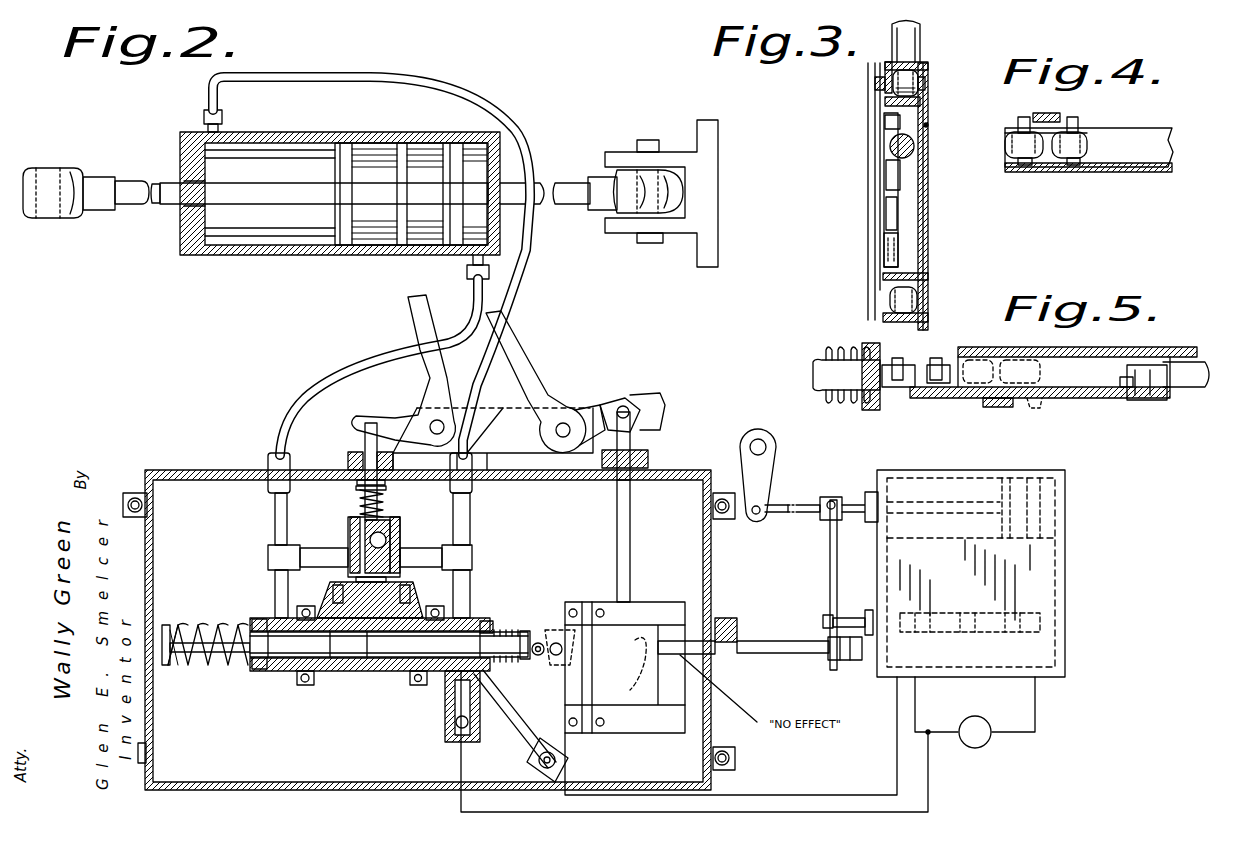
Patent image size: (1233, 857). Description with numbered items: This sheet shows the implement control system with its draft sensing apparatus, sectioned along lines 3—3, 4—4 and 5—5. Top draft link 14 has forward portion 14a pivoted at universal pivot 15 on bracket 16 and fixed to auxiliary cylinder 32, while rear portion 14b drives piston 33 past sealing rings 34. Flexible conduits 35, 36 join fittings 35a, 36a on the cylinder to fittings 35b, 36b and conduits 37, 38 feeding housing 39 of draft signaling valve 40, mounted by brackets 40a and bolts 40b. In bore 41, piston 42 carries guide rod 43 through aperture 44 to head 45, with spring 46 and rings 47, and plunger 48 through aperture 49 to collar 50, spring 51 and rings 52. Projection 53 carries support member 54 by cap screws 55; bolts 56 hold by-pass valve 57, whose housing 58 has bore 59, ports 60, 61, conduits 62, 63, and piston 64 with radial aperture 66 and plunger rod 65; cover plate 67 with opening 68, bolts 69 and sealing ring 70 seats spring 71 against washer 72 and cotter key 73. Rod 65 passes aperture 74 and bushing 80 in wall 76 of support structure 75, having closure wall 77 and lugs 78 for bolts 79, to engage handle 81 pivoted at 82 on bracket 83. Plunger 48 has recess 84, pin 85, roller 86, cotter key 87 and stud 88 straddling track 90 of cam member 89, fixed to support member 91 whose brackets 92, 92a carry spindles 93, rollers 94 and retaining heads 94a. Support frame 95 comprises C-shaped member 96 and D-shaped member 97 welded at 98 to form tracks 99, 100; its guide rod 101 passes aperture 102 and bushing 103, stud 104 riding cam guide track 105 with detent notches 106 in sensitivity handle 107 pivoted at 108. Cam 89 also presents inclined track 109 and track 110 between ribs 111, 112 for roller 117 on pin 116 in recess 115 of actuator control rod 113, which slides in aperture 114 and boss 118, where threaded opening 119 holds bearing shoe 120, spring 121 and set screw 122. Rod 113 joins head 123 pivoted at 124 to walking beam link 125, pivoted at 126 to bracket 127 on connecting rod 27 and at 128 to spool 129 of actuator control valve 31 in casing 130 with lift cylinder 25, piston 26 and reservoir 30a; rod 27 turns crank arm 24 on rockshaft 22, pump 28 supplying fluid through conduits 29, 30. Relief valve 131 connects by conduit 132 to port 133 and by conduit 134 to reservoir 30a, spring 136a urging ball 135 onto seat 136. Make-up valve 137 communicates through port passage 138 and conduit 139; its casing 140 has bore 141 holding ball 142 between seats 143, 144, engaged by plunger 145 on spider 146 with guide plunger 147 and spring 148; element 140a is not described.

In FIG. 2, the section line 3— 3 is at (645, 752).
In FIG. 2, the section line 4— 4 is at (612, 598).
In FIG. 2, the section line 5— 5 is at (695, 672).
In FIG. 2, the upper draft link 14 is at (103, 219).
In FIG. 2, the forward link portion 14a is at (568, 187).
In FIG. 2, the rear link portion 14b is at (130, 187).
In FIG. 2, the universal pivot 15 is at (628, 182).
In FIG. 2, the bracket 16 is at (678, 151).
In FIG. 2, the rockshaft 22 is at (760, 440).
In FIG. 2, the crank arm 24 is at (768, 500).
In FIG. 2, the lift cylinder 25 is at (975, 480).
In FIG. 2, the piston 26 is at (1032, 500).
In FIG. 2, the connecting rod 27 is at (780, 505).
In FIG. 2, the pump 28 is at (979, 749).
In FIG. 2, the conduit 29 is at (917, 710).
In FIG. 2, the conduit 30 is at (1035, 710).
In FIG. 2, the reservoir 30a is at (1040, 660).
In FIG. 2, the actuator control valve 31 is at (1042, 620).
In FIG. 2, the auxiliary hydraulic cylinder 32 is at (405, 133).
In FIG. 2, the piston 33 is at (378, 236).
In FIG. 2, the sealing rings 34 is at (183, 215).
In FIG. 2, the flexible hose conduit 35 is at (472, 311).
In FIG. 2, the fitting 35a is at (466, 274).
In FIG. 2, the fitting 35b is at (270, 558).
In FIG. 2, the flexible hose conduit 36 is at (520, 290).
In FIG. 2, the fitting 36a is at (217, 113).
In FIG. 2, the fitting 36b is at (462, 552).
In FIG. 2, the conduit 37 is at (273, 585).
In FIG. 2, the conduit 38 is at (472, 578).
In FIG. 2, the valve housing 39 is at (345, 676).
In FIG. 2, the draft signaling control valve unit 40 is at (378, 688).
In FIG. 2, the mounting brackets 40a is at (302, 692).
In FIG. 2, the fastening bolt means 40b is at (388, 678).
In FIG. 2, the bore 41 is at (370, 678).
In FIG. 2, the piston 42 is at (322, 691).
In FIG. 2, the guide rod 43 is at (292, 668).
In FIG. 2, the aperture 44 is at (257, 673).
In FIG. 2, the enlarged head 45 is at (168, 668).
In FIG. 2, the spring 46 is at (214, 632).
In FIG. 2, the sealing rings 47 is at (240, 666).
In FIG. 2, the plunger member 48 is at (404, 618).
In FIG. 3, the plunger member 48 is at (915, 166).
In FIG. 5, the plunger member 48 is at (815, 372).
In FIG. 2, the aperture 49 is at (505, 650).
In FIG. 2, the abutment collar 50 is at (556, 660).
In FIG. 5, the abutment collar 50 is at (866, 408).
In FIG. 2, the coiled spring 51 is at (508, 612).
In FIG. 5, the coiled spring 51 is at (826, 348).
In FIG. 2, the sealing rings 52 is at (478, 625).
In FIG. 2, the pedestal-like projection 53 is at (440, 606).
In FIG. 2, the plate-like support member 54 is at (405, 595).
In FIG. 2, the cap screws 55 is at (390, 588).
In FIG. 2, the bolts 56 is at (370, 604).
In FIG. 2, the by-pass valve 57 is at (343, 526).
In FIG. 2, the cylinder-like housing 58 is at (392, 535).
In FIG. 2, the bore 59 is at (373, 602).
In FIG. 2, the port 60 is at (352, 545).
In FIG. 2, the port 61 is at (400, 545).
In FIG. 2, the conduit 62 is at (340, 552).
In FIG. 2, the conduit 63 is at (400, 560).
In FIG. 2, the piston 64 is at (345, 572).
In FIG. 2, the plunger rod 65 is at (380, 475).
In FIG. 2, the radial aperture 66 is at (340, 590).
In FIG. 2, the cover plate 67 is at (392, 520).
In FIG. 2, the opening 68 is at (400, 530).
In FIG. 2, the bolts 69 is at (360, 517).
In FIG. 2, the sealing ring 70 is at (400, 512).
In FIG. 2, the coil spring 71 is at (355, 490).
In FIG. 2, the stop collar 72 is at (356, 489).
In FIG. 2, the cotter key 73 is at (385, 490).
In FIG. 2, the aperture 74 is at (340, 483).
In FIG. 2, the support structure 75 is at (195, 460).
In FIG. 2, the outer perimeter wall 76 is at (215, 470).
In FIG. 2, the inner closure wall 77 is at (195, 509).
In FIG. 2, the lugs 78 is at (733, 760).
In FIG. 2, the fastening bolt means 79 is at (724, 750).
In FIG. 2, the gland or bushing 80 is at (352, 468).
In FIG. 2, the control handle 81 is at (420, 372).
In FIG. 2, the pivot 82 is at (440, 420).
In FIG. 2, the bracket 83 is at (518, 458).
In FIG. 5, the recess 84 is at (880, 395).
In FIG. 5, the stud 85 is at (900, 362).
In FIG. 2, the roller 86 is at (538, 660).
In FIG. 5, the roller 86 is at (905, 392).
In FIG. 4, the cotter key 87 is at (1048, 116).
In FIG. 5, the cotter key 87 is at (888, 390).
In FIG. 2, the large-headed pin 88 is at (562, 612).
In FIG. 5, the large-headed pin 88 is at (937, 360).
In FIG. 2, the cam member 89 is at (625, 690).
In FIG. 3, the cam member 89 is at (880, 225).
In FIG. 4, the cam member 89 is at (1135, 130).
In FIG. 5, the cam member 89 is at (945, 398).
In FIG. 2, the overturned edge portion 90 is at (565, 715).
In FIG. 3, the overturned edge portion 90 is at (885, 212).
In FIG. 5, the overturned edge portion 90 is at (922, 388).
In FIG. 2, the support member 91 is at (625, 655).
In FIG. 3, the support member 91 is at (868, 185).
In FIG. 5, the support member 91 is at (998, 408).
In FIG. 3, the upper roller carrying bracket 92 is at (880, 95).
In FIG. 4, the upper roller carrying bracket 92 is at (1010, 131).
In FIG. 3, the lower roller carrying bracket 92a is at (885, 285).
In FIG. 5, the lower roller carrying bracket 92a is at (1035, 410).
In FIG. 3, the spindles 93 is at (890, 298).
In FIG. 4, the spindles 93 is at (1073, 120).
In FIG. 3, the roller member 94 is at (928, 290).
In FIG. 4, the roller member 94 is at (1008, 150).
In FIG. 5, the roller member 94 is at (1020, 362).
In FIG. 3, the enlarged head 94a is at (918, 300).
In FIG. 4, the enlarged head 94a is at (1072, 165).
In FIG. 3, the cam member support frame 95 is at (937, 230).
In FIG. 3, the C-shaped member 96 is at (928, 200).
In FIG. 4, the C-shaped member 96 is at (1120, 172).
In FIG. 5, the C-shaped member 96 is at (1165, 357).
In FIG. 3, the D-shaped inner member 97 is at (923, 188).
In FIG. 5, the D-shaped inner member 97 is at (1110, 353).
In FIG. 3, the welds 98 is at (928, 270).
In FIG. 3, the upper track 99 is at (922, 103).
In FIG. 3, the lower track 100 is at (930, 278).
In FIG. 2, the guide rod 101 is at (632, 541).
In FIG. 3, the guide rod 101 is at (920, 40).
In FIG. 2, the aperture 102 is at (632, 500).
In FIG. 2, the gland or bushing 103 is at (650, 458).
In FIG. 2, the large-headed stud 104 is at (662, 415).
In FIG. 2, the cam guide track 105 is at (603, 410).
In FIG. 2, the detent notches 106 is at (660, 414).
In FIG. 2, the sensitivity lever 107 is at (512, 348).
In FIG. 2, the pivot 108 is at (562, 420).
In FIG. 2, the inclined cam track 109 is at (648, 698).
In FIG. 3, the inclined cam track 109 is at (884, 250).
In FIG. 2, the track 110 is at (628, 670).
In FIG. 2, the ridge 111 is at (625, 650).
In FIG. 5, the ridge 111 is at (1115, 383).
In FIG. 2, the ridge 112 is at (645, 672).
In FIG. 3, the ridge 112 is at (890, 172).
In FIG. 5, the ridge 112 is at (1165, 362).
In FIG. 2, the actuator control rod 113 is at (780, 654).
In FIG. 3, the actuator control rod 113 is at (890, 148).
In FIG. 5, the actuator control rod 113 is at (1192, 390).
In FIG. 2, the aperture 114 is at (735, 655).
In FIG. 5, the recess 115 is at (1155, 400).
In FIG. 5, the stud 116 is at (1140, 400).
In FIG. 2, the roller 117 is at (633, 693).
In FIG. 3, the roller 117 is at (887, 128).
In FIG. 5, the roller 117 is at (1125, 388).
In FIG. 2, the boss 118 is at (738, 632).
In FIG. 2, the threaded opening 119 is at (730, 620).
In FIG. 2, the bearing shoe 120 is at (740, 639).
In FIG. 2, the spring 121 is at (736, 625).
In FIG. 2, the set screw 122 is at (722, 618).
In FIG. 2, the head 123 is at (848, 661).
In FIG. 2, the pivot 124 is at (835, 660).
In FIG. 2, the walking beam link 125 is at (830, 565).
In FIG. 2, the pivot 126 is at (828, 497).
In FIG. 2, the bracket 127 is at (815, 513).
In FIG. 2, the pivot 128 is at (823, 621).
In FIG. 2, the control spool 129 is at (848, 620).
In FIG. 2, the casing-like structure 130 is at (1084, 548).
In FIG. 2, the pressure relief and bleed valve 131 is at (524, 762).
In FIG. 2, the conduit 132 is at (515, 728).
In FIG. 2, the port 133 is at (462, 650).
In FIG. 2, the conduit 134 is at (797, 795).
In FIG. 2, the ball member 135 is at (556, 752).
In FIG. 2, the valve seat 136 is at (530, 768).
In FIG. 2, the spring 136a is at (565, 765).
In FIG. 2, the make-up and surge restricting valve 137 is at (470, 742).
In FIG. 2, the port passage 138 is at (445, 680).
In FIG. 2, the conduit 139 is at (460, 812).
In FIG. 2, the casing 140 is at (458, 745).
In FIG. 2, the valve 140a is at (400, 712).
In FIG. 2, the bore 141 is at (485, 706).
In FIG. 2, the ball 142 is at (478, 727).
In FIG. 2, the valve seat 143 is at (448, 735).
In FIG. 2, the valve seat 144 is at (452, 740).
In FIG. 2, the plunger 145 is at (448, 725).
In FIG. 2, the cruciform-shaped spider 146 is at (485, 692).
In FIG. 2, the guide plunger 147 is at (455, 712).
In FIG. 2, the spring 148 is at (450, 700).